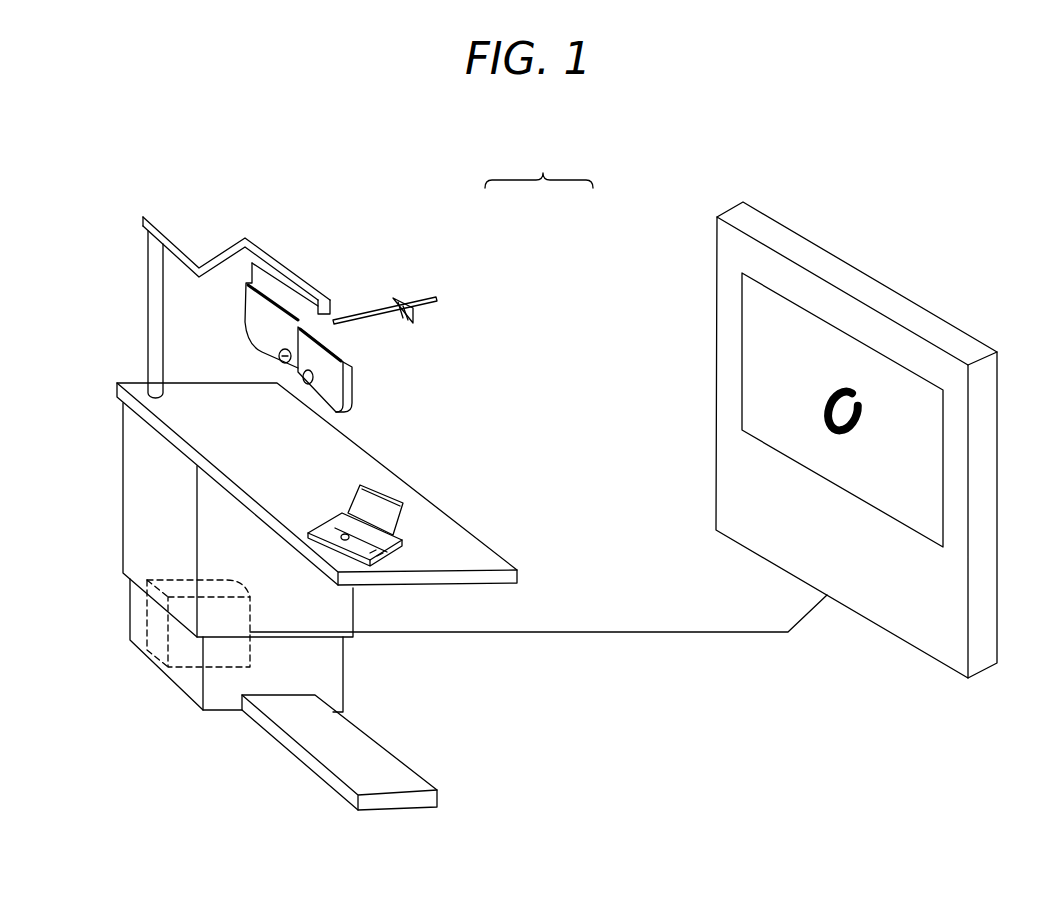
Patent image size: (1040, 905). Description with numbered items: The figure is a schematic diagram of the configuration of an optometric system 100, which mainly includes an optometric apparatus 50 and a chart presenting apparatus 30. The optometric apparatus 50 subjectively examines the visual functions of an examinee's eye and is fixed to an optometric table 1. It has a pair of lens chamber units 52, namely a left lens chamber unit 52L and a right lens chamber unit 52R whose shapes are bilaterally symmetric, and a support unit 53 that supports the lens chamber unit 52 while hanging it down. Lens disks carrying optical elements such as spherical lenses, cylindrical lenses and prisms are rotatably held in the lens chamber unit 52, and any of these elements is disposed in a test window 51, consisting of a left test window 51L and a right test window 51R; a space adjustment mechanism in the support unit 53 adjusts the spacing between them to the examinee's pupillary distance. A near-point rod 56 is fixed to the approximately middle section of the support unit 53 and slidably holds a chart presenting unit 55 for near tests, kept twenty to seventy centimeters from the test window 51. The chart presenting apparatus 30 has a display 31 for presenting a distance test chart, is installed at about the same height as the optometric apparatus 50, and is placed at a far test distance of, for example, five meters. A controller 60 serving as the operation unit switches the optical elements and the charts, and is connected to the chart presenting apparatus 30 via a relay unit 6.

The optometric system 100 is at (539, 167).
The optometric apparatus 50 is at (423, 255).
The chart presenting apparatus 30 is at (668, 262).
The display 31 is at (777, 350).
The optometric table 1 is at (135, 548).
The relay unit 6 is at (160, 630).
The controller 60 is at (328, 507).
The test window 51 is at (63, 283).
The right test window 51R is at (280, 353).
The left test window 51L is at (303, 377).
The lens chamber unit 52 is at (371, 377).
The left lens chamber unit 52L is at (253, 302).
The right lens chamber unit 52R is at (355, 400).
The support unit 53 is at (295, 262).
The chart presenting unit 55 is at (413, 320).
The near-point rod 56 is at (377, 307).